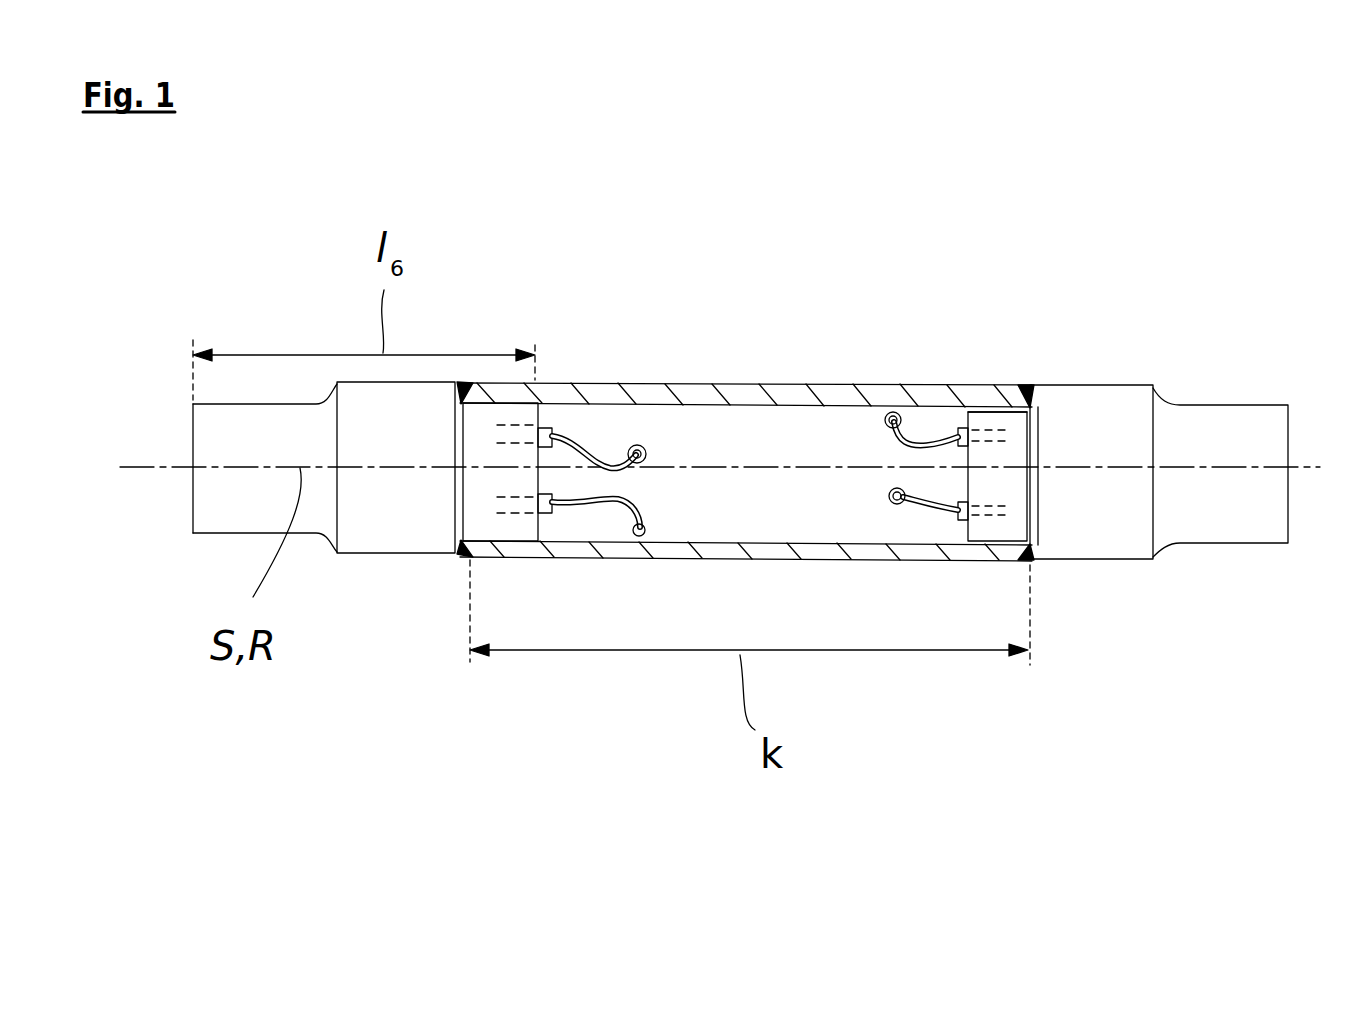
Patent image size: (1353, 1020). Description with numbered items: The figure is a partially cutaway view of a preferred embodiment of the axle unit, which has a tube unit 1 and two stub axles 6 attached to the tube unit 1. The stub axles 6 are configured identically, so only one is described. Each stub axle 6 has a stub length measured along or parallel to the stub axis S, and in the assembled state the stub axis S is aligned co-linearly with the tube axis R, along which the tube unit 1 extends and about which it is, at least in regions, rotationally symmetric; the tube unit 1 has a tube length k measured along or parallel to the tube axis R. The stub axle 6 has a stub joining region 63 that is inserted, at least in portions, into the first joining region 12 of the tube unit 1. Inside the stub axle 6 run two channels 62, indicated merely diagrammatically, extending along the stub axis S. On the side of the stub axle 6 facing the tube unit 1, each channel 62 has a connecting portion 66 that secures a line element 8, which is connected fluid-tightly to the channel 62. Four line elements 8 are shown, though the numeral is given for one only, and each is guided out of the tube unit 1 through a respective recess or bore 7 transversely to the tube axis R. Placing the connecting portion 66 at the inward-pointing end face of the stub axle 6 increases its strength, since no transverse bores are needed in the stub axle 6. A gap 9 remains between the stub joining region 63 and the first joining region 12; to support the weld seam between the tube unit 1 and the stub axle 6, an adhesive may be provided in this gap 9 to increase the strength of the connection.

The tube unit 1 is at (752, 385).
The stub axle 6 is at (395, 552).
The recess or bore 7 is at (652, 452).
The line element 8 is at (920, 438).
The gap 9 is at (468, 388).
The first joining region 12 is at (1000, 407).
The channel 62 is at (502, 425).
The stub joining region 63 is at (993, 533).
The connecting portion 66 is at (548, 434).